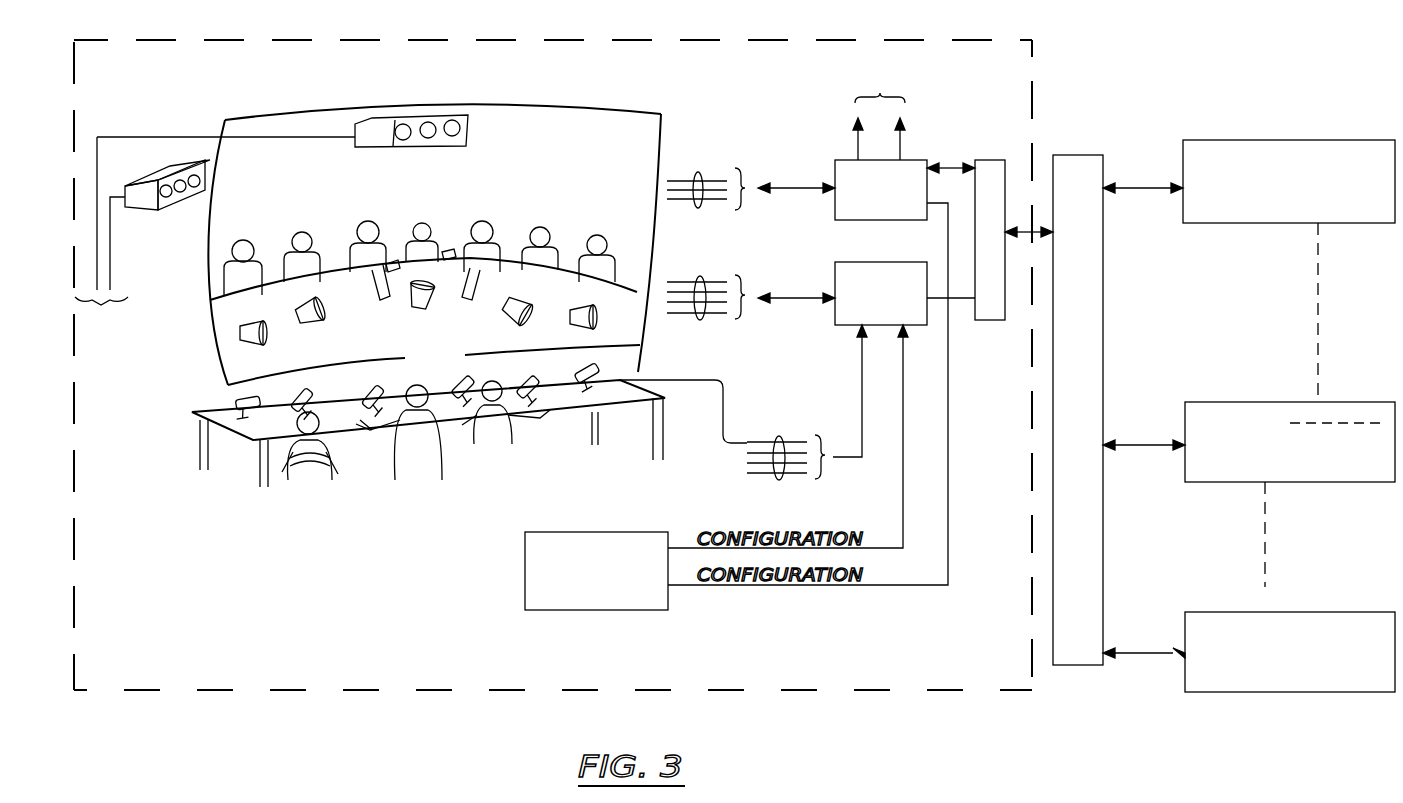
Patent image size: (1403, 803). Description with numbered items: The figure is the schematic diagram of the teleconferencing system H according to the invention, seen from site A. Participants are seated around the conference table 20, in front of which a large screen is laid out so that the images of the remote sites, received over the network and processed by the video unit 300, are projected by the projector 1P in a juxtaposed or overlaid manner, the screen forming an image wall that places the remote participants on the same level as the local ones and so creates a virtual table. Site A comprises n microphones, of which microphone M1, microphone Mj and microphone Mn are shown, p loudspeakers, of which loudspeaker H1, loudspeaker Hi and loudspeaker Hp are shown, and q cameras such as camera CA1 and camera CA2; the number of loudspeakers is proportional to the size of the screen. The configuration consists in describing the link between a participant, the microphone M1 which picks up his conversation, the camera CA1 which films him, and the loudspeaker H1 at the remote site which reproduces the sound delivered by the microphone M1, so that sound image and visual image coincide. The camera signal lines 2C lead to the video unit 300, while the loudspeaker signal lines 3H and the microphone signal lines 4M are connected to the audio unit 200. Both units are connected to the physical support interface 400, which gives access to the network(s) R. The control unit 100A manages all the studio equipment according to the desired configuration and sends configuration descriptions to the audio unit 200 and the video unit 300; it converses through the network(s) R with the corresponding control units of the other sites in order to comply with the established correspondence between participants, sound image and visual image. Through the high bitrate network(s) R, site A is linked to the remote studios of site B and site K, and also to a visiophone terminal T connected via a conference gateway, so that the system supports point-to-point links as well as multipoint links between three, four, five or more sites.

The teleconferencing system H is at (540, 52).
The projector 1P is at (490, 200).
The camera CA1 is at (392, 263).
The second camera CA2 is at (448, 252).
The loudspeaker p Hp is at (240, 333).
The loudspeaker i Hi is at (418, 308).
The loudspeaker H1 is at (594, 332).
The microphone M1 is at (235, 400).
The microphone j Mj is at (460, 383).
The microphone n Mn is at (600, 370).
The conference table 20 is at (200, 434).
The camera signal lines 2C is at (710, 176).
The loudspeaker signal lines 3H is at (710, 280).
The microphone signal lines 4M is at (792, 437).
The video unit 300 is at (836, 160).
The audio unit 200 is at (836, 262).
The physical support interface 400 is at (1000, 130).
The network(s) R is at (1075, 155).
The site B is at (1318, 140).
The site K is at (1342, 484).
The visiophone terminal T is at (1338, 692).
The control unit 100A is at (627, 612).